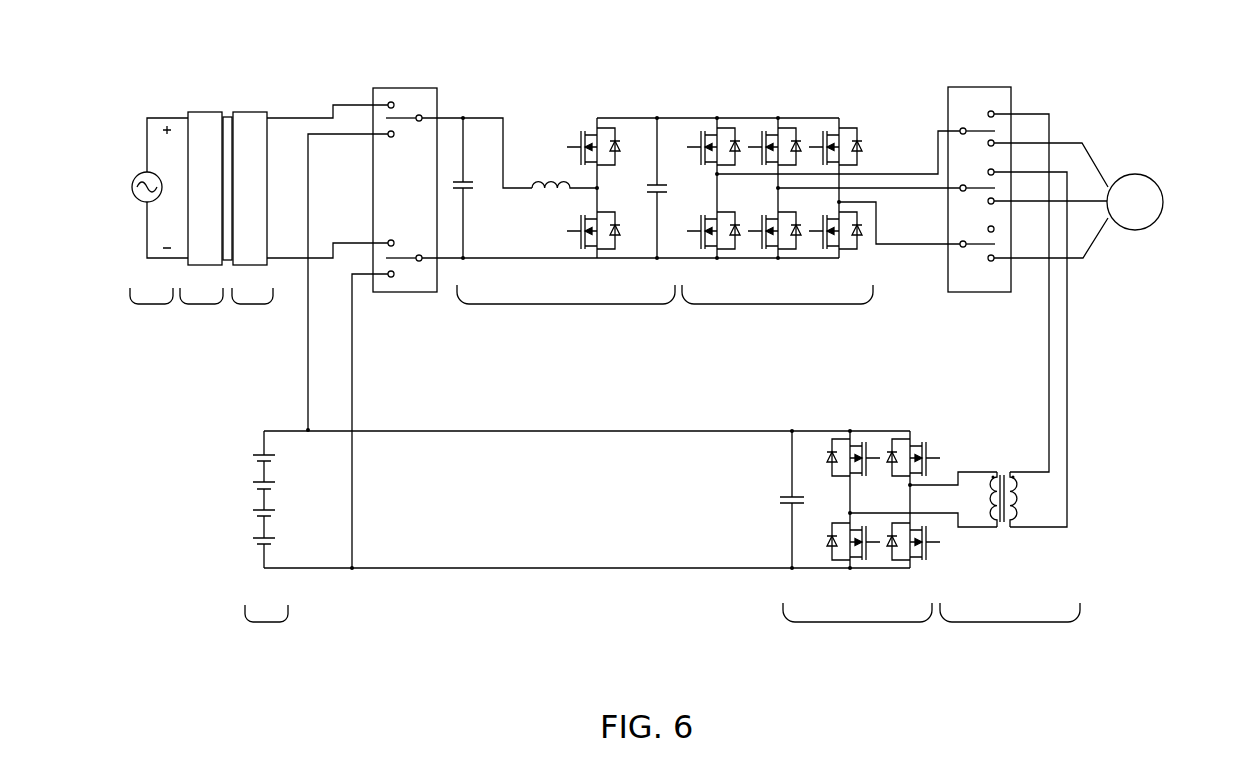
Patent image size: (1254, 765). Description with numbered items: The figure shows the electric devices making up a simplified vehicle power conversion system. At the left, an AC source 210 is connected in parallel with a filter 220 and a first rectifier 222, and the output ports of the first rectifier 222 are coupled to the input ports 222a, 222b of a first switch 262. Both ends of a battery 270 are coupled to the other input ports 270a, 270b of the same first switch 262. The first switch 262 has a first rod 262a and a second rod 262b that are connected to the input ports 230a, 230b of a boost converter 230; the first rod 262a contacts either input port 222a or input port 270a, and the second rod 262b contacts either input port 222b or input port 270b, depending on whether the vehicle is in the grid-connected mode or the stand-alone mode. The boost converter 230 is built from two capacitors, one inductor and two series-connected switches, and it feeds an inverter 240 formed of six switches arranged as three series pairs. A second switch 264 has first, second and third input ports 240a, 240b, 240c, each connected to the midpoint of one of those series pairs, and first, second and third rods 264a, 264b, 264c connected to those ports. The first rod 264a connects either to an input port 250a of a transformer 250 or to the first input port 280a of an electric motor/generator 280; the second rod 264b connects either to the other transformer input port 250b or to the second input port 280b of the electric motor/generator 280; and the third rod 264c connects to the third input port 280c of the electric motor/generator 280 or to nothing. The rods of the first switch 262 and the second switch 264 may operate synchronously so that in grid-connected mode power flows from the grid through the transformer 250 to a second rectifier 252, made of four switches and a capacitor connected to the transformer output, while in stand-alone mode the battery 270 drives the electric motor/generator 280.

The AC source 210 is at (140, 306).
The filter 220 is at (195, 112).
The first rectifier 222 is at (260, 112).
The input port of the first switch 222a is at (388, 103).
The input port of the first switch 222b is at (388, 243).
The boost converter 230 is at (560, 305).
The input port of the boost converter 230a is at (423, 116).
The input port of the boost converter 230b is at (423, 262).
The inverter 240 is at (770, 305).
The first input port of the second switch 240a is at (960, 128).
The second input port of the second switch 240b is at (964, 186).
The third input port of the second switch 240c is at (960, 246).
The transformer 250 is at (1008, 622).
The input port of the transformer 250a is at (994, 112).
The input port of the transformer 250b is at (994, 172).
The second rectifier 252 is at (855, 622).
The first switch 262 is at (408, 88).
The first rod 262a is at (403, 120).
The second rod 262b is at (402, 257).
The second switch 264 is at (1005, 87).
The first rod 264a is at (978, 128).
The second rod 264b is at (978, 190).
The third rod 264c is at (978, 250).
The battery 270 is at (266, 622).
The input port of the first switch 270a is at (389, 137).
The input port of the first switch 270b is at (394, 278).
The electric motor/generator 280 is at (1160, 215).
The first input port of the electric motor/generator 280a is at (994, 143).
The second input port of the electric motor/generator 280b is at (994, 203).
The third input port of the electric motor/generator 280c is at (991, 261).